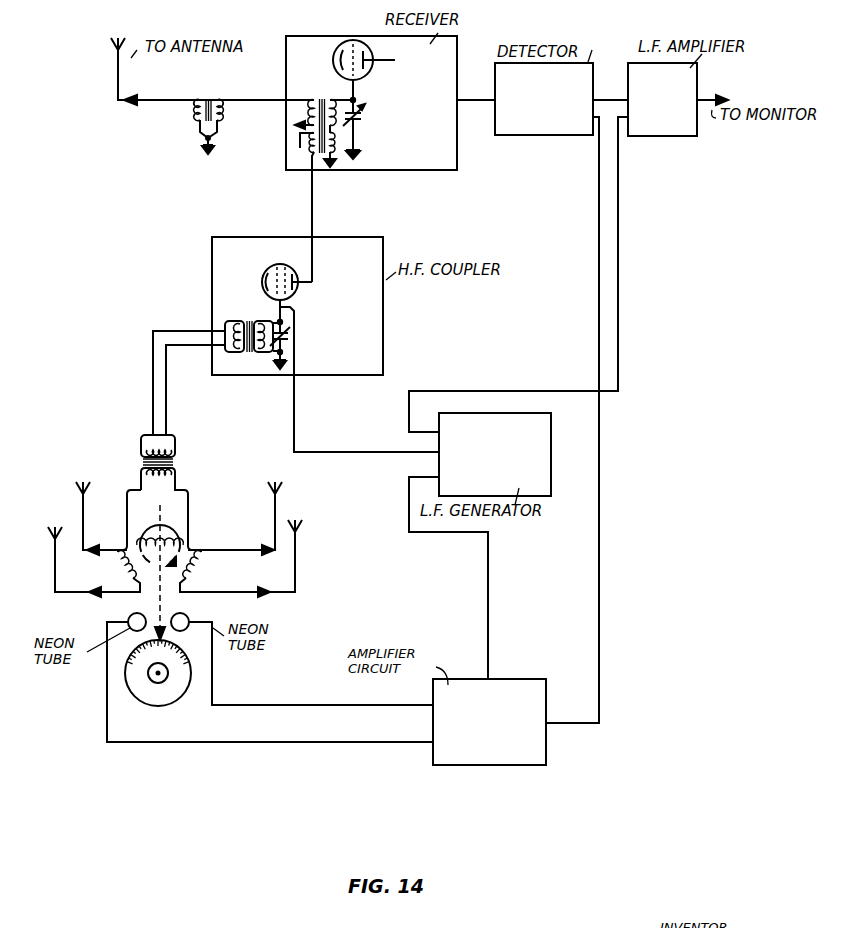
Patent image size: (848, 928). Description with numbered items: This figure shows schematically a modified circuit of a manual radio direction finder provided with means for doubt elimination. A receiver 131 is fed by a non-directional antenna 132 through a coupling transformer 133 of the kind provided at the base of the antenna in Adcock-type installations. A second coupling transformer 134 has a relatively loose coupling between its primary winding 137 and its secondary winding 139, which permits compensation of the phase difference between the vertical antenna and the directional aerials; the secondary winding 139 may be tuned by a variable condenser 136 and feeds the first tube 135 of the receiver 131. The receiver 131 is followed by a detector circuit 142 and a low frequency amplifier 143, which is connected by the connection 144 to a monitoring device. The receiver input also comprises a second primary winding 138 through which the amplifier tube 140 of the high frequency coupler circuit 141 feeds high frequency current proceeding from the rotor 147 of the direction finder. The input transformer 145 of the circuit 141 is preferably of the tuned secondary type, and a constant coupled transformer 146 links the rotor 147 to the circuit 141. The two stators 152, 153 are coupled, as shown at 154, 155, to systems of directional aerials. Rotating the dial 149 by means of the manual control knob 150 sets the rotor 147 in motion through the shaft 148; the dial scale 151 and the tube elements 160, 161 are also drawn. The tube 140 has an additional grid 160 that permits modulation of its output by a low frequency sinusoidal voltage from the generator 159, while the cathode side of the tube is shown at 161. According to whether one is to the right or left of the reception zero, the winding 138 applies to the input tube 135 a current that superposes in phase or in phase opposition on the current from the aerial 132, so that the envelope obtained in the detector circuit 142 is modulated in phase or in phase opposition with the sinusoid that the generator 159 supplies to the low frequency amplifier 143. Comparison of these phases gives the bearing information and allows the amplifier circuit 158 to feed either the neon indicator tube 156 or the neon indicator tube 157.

The receiver 131 is at (371, 103).
The antenna 132 is at (141, 95).
The coupling transformer 133 is at (210, 95).
The second coupling transformer 134 is at (324, 101).
The first tube 135 is at (362, 38).
The variable condenser 136 is at (358, 119).
The primary winding 137 is at (308, 106).
The second primary winding 138 is at (311, 207).
The secondary winding 139 is at (336, 134).
The amplifier tube 140 is at (290, 282).
The amplifier circuit 141 is at (297, 306).
The detector circuit 142 is at (544, 99).
The low frequency amplifier 143 is at (662, 99).
The connection 144 is at (715, 92).
The input transformer 145 is at (247, 321).
The transformer 146 is at (176, 458).
The rotor 147 is at (165, 540).
The shaft 148 is at (163, 619).
The dial 149 is at (170, 680).
The manual control knob 150 is at (167, 679).
The dial scale 151 is at (182, 661).
The stator 152 is at (120, 555).
The stator 153 is at (196, 568).
The coupling to directional aerials 154 is at (94, 562).
The coupling to directional aerials 155 is at (235, 530).
The neon indicator tube 156 is at (130, 618).
The neon indicator tube 157 is at (191, 620).
The amplifier circuit 158 is at (489, 722).
The generator 159 is at (495, 454).
The additional grid 160 is at (316, 292).
The cathode 161 is at (267, 273).